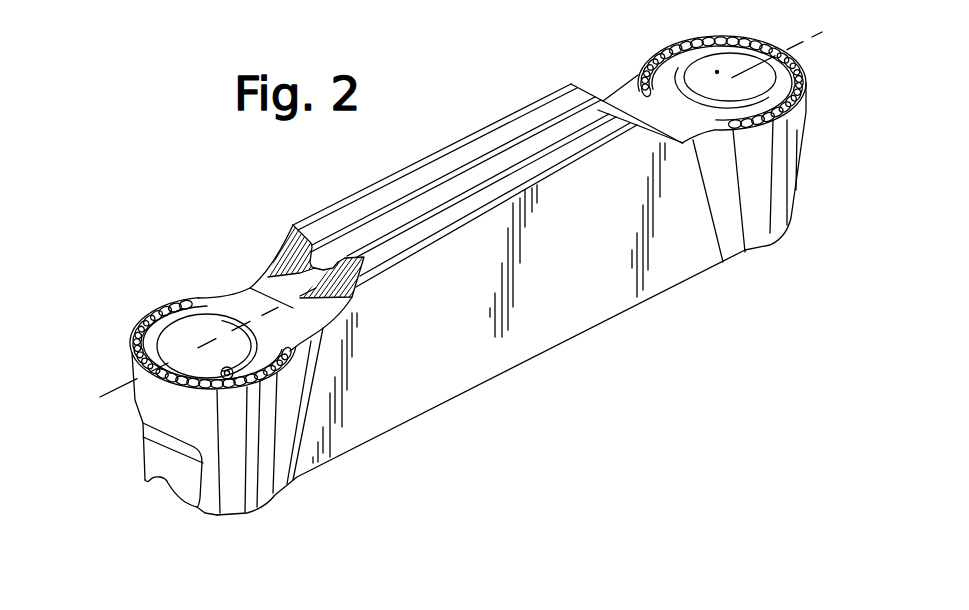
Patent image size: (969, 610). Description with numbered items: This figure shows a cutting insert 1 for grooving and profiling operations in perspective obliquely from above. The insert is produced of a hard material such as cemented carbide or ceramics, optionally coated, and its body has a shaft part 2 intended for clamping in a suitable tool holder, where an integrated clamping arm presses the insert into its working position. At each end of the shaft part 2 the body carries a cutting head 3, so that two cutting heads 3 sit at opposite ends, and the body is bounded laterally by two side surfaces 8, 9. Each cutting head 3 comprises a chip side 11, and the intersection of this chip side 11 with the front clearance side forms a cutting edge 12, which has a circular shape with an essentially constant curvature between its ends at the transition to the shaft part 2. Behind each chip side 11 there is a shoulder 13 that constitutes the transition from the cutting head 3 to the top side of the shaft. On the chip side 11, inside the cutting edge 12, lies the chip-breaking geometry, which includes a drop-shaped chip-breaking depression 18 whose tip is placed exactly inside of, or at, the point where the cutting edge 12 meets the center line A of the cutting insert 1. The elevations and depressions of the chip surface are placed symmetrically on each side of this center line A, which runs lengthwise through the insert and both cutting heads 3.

The cutting insert 1 is at (438, 148).
The shaft part 2 is at (441, 408).
The cutting head 3 is at (160, 306).
The side surface 8 is at (528, 106).
The side surface 9 is at (606, 321).
The chip side 11 is at (190, 316).
The cutting edge 12 is at (136, 333).
The shoulder 13 is at (589, 95).
The chip-breaking depression 18 is at (205, 343).
The center line A is at (805, 47).